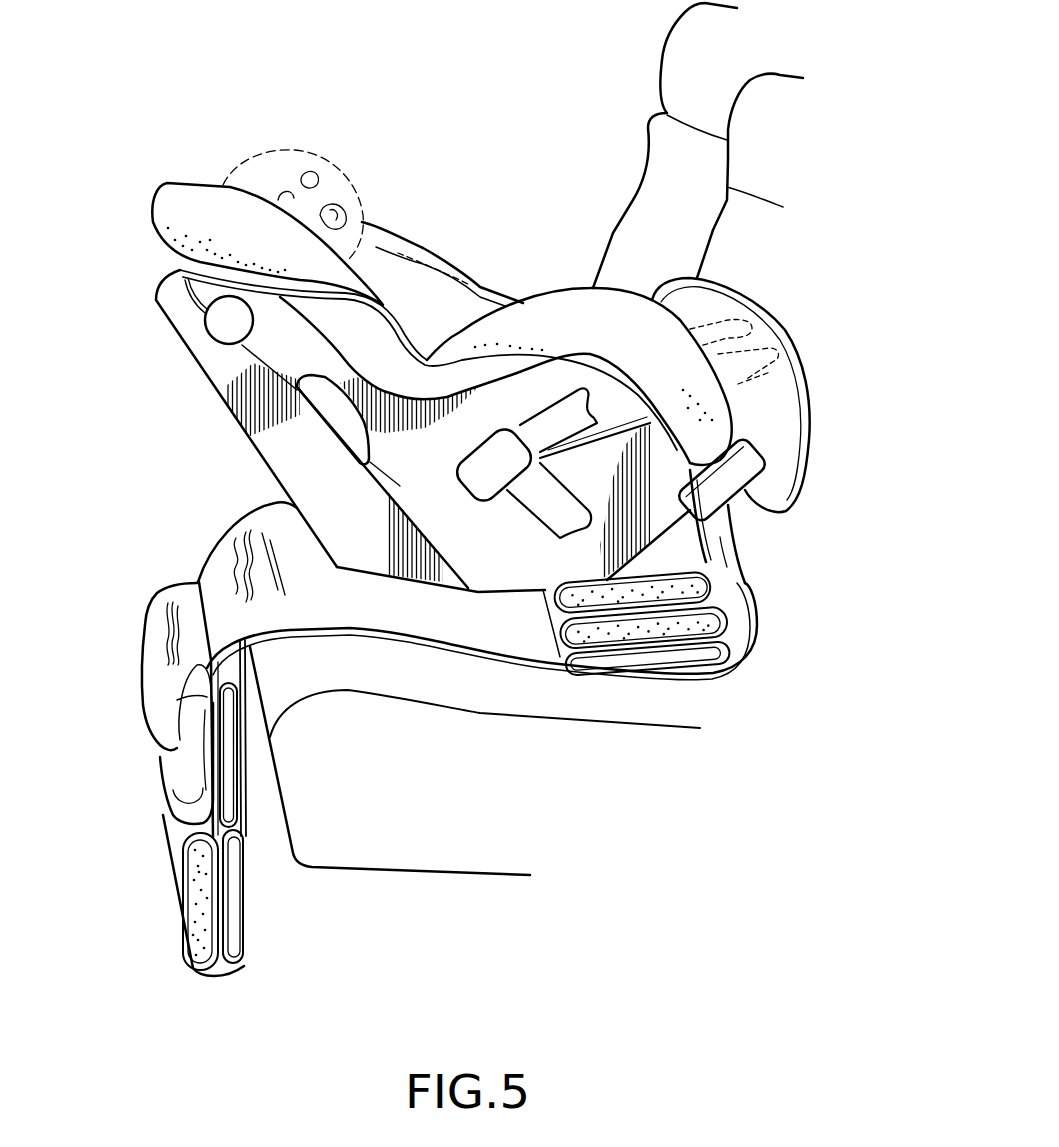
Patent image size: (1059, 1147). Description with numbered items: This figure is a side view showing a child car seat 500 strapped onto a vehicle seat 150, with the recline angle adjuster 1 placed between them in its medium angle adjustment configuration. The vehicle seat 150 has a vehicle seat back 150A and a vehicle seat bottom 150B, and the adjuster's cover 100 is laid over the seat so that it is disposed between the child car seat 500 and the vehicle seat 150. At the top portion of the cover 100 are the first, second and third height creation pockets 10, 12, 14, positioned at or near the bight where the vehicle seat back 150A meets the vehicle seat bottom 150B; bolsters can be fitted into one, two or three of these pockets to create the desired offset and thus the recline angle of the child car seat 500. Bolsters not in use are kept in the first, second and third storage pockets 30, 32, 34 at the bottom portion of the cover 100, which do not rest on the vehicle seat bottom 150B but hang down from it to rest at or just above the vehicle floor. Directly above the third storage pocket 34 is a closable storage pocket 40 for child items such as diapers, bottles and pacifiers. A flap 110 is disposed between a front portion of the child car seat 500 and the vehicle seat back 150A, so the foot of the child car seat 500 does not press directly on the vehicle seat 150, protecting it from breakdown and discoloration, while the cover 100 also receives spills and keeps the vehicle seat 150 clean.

The recline angle adjuster 1 is at (122, 558).
The child car seat 500 is at (290, 463).
The vehicle seat back 150A is at (673, 173).
The flap 110 is at (780, 447).
The third height creation pocket 14 is at (712, 590).
The second height creation pocket 12 is at (715, 628).
The first height creation pocket 10 is at (716, 650).
The cover 100 is at (477, 628).
The vehicle seat bottom 150B is at (360, 692).
The vehicle seat 150 is at (600, 697).
The storage pocket 40 is at (174, 761).
The first storage pocket 30 is at (235, 812).
The second storage pocket 32 is at (235, 938).
The third storage pocket 34 is at (202, 950).